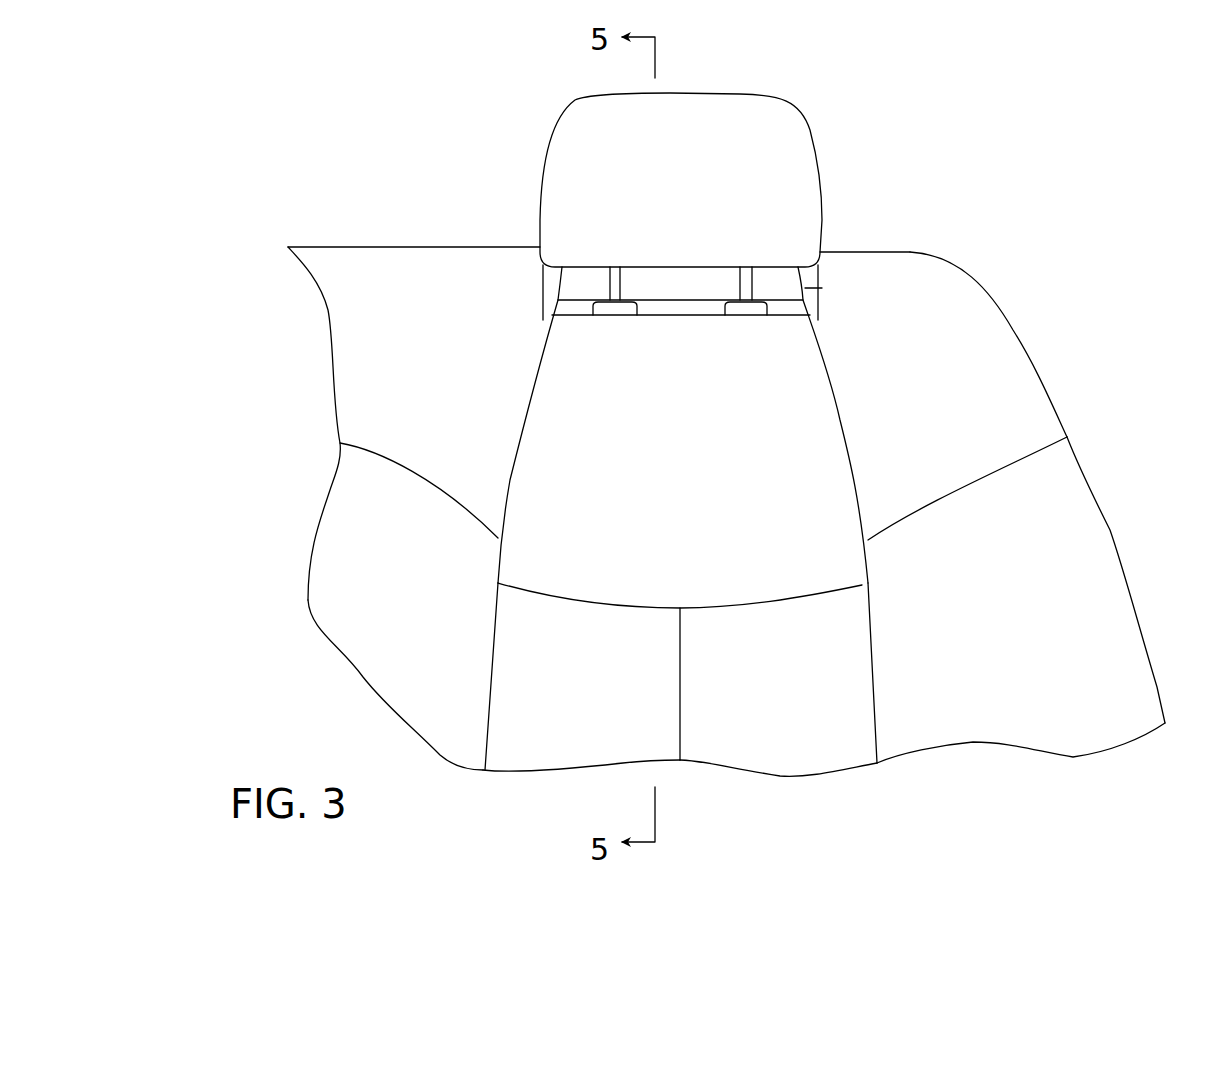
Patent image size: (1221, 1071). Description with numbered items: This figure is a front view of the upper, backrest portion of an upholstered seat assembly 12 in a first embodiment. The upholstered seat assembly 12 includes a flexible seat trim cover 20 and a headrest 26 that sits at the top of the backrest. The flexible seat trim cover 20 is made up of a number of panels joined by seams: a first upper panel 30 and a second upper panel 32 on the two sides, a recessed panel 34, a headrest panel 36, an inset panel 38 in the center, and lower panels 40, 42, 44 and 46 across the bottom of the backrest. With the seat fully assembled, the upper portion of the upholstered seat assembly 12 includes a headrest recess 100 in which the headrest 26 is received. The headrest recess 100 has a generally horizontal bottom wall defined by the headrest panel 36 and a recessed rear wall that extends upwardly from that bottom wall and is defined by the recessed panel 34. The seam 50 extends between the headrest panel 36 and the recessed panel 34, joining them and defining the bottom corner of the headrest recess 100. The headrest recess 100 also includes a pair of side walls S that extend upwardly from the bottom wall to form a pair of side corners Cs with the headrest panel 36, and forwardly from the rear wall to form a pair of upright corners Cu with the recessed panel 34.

The upholstered seat assembly 12 is at (1030, 221).
The flexible seat trim cover 20 is at (1062, 384).
The headrest 26 is at (760, 165).
The first upper panel 30 is at (398, 355).
The second upper panel 32 is at (950, 348).
The recessed panel 34 is at (775, 283).
The headrest panel 36 is at (792, 310).
The inset panel 38 is at (775, 448).
The lower panel 40 is at (378, 650).
The lower panel 42 is at (563, 718).
The lower panel 44 is at (780, 723).
The lower panel 46 is at (1053, 643).
The seam 50 is at (653, 300).
The headrest recess 100 is at (704, 288).
The side walls S is at (552, 288).
The upright corners Cu is at (799, 287).
The side corners Cs is at (800, 317).